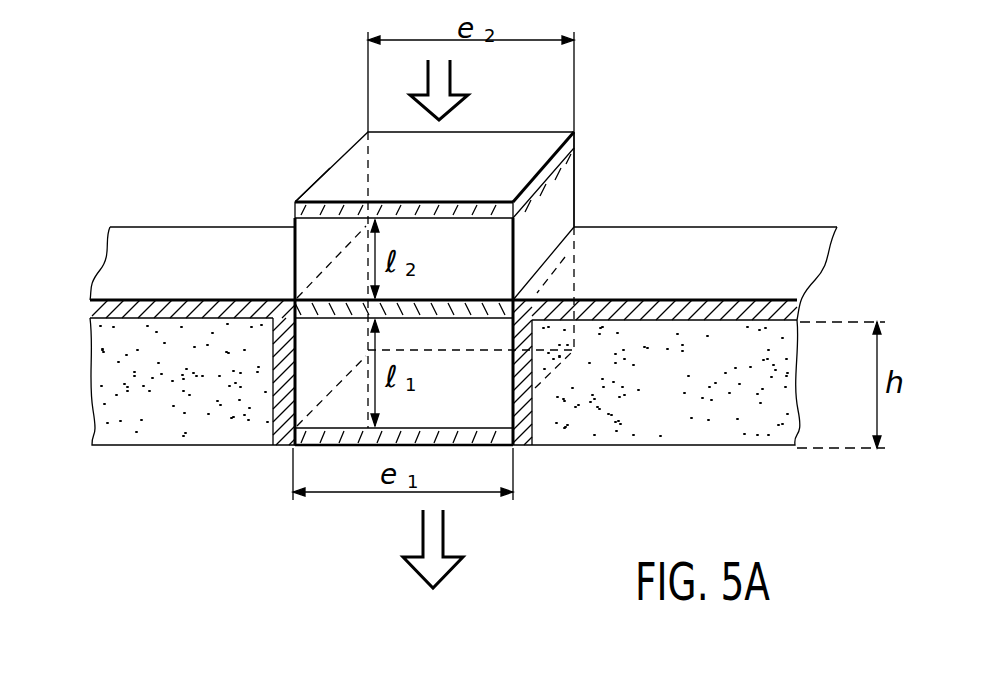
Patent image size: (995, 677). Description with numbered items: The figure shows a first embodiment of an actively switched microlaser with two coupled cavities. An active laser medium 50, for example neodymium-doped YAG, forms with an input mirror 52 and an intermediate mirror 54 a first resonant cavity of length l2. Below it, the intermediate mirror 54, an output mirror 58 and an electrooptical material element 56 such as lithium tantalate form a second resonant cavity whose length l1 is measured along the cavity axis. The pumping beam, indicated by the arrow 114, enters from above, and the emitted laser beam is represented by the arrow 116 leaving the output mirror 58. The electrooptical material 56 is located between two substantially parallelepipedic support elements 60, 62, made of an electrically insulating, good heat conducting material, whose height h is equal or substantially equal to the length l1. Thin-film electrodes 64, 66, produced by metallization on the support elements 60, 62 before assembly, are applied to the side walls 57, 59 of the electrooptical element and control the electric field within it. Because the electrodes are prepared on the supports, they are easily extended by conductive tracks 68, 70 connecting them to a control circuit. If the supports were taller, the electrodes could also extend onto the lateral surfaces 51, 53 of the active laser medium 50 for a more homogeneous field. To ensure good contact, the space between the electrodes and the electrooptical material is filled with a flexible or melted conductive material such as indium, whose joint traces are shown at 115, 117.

The active laser medium 50 is at (558, 210).
The lateral surface of the active laser medium 51 is at (570, 125).
The input mirror 52 is at (490, 140).
The lateral surface of the active laser medium 53 is at (338, 175).
The intermediate mirror 54 is at (330, 302).
The electrooptical material element 56 is at (500, 450).
The side wall of the electrooptical element 57 is at (293, 452).
The output mirror 58 is at (335, 452).
The side wall of the electrooptical element 59 is at (575, 265).
The support element 60 is at (132, 422).
The support element 62 is at (765, 430).
The electrode 64 is at (525, 355).
The electrode 66 is at (278, 340).
The conductive track 68 is at (780, 300).
The conductive track 70 is at (118, 308).
The pumping beam 114 is at (432, 77).
The conductive joint 115 is at (290, 380).
The emitted laser beam 116 is at (438, 528).
The conductive joint 117 is at (525, 398).